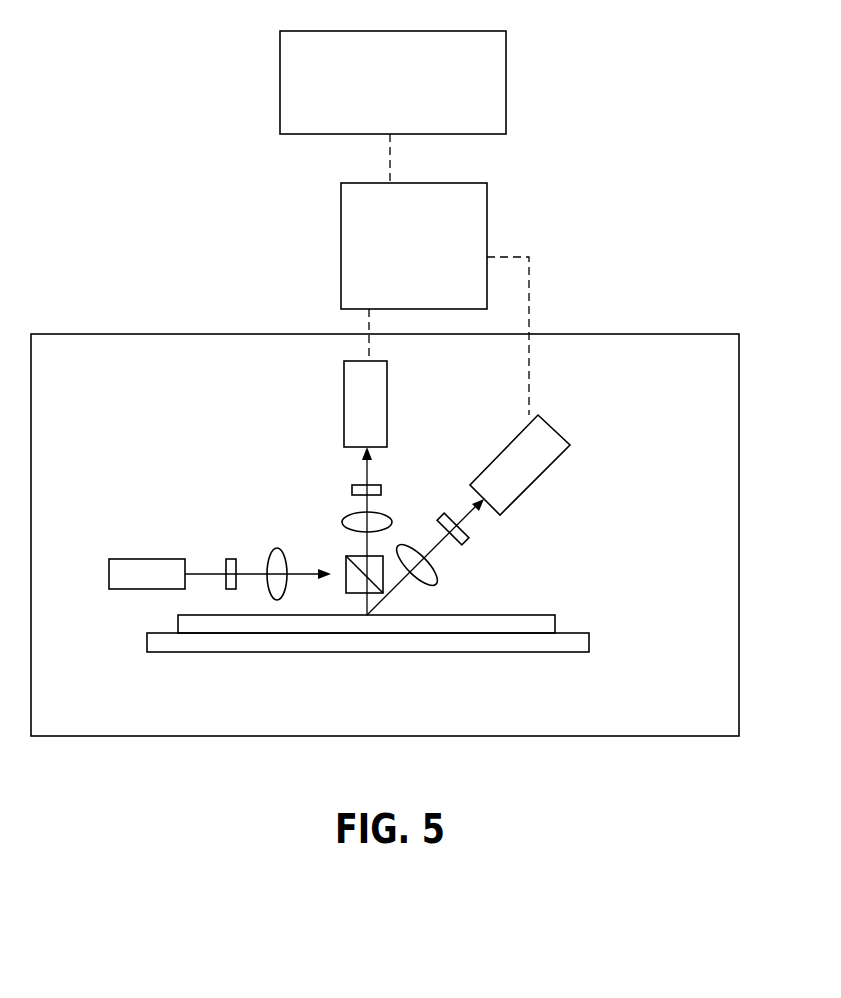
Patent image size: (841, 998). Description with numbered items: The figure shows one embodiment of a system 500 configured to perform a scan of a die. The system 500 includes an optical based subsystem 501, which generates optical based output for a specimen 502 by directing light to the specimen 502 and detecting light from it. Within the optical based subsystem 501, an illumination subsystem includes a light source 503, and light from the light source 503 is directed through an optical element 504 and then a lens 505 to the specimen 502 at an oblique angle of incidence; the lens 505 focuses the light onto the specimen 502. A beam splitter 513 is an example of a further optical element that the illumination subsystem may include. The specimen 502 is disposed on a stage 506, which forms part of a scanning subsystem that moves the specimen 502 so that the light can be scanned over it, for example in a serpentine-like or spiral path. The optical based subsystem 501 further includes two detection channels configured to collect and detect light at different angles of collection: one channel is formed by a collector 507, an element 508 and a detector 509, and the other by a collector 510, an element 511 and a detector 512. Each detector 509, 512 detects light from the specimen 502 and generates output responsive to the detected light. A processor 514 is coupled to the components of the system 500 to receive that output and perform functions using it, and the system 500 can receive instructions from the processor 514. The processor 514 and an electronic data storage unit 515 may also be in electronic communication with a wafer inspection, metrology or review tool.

The system 500 is at (164, 94).
The optical based subsystem 501 is at (631, 333).
The specimen 502 is at (178, 617).
The light source 503 is at (119, 558).
The optical element 504 is at (232, 558).
The lens 505 is at (273, 551).
The stage 506 is at (148, 641).
The collector 507 is at (344, 518).
The element 508 is at (352, 488).
The detector 509 is at (344, 405).
The collector 510 is at (435, 580).
The element 511 is at (465, 543).
The detector 512 is at (552, 466).
The beam splitter 513 is at (350, 551).
The processor 514 is at (414, 246).
The electronic data storage unit 515 is at (393, 82).